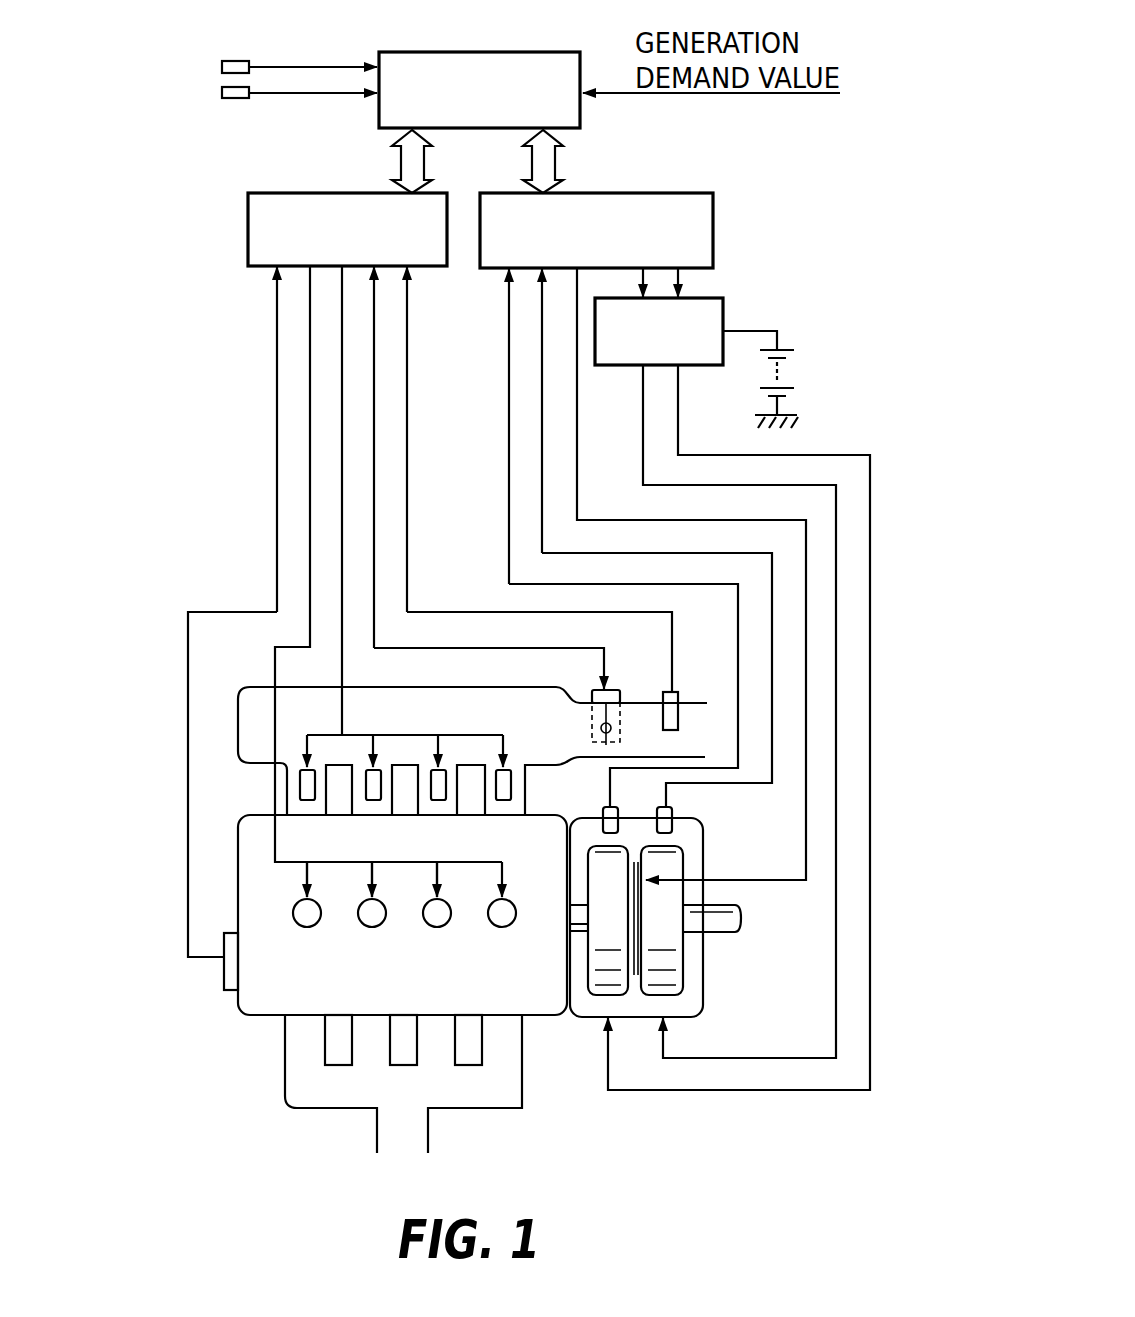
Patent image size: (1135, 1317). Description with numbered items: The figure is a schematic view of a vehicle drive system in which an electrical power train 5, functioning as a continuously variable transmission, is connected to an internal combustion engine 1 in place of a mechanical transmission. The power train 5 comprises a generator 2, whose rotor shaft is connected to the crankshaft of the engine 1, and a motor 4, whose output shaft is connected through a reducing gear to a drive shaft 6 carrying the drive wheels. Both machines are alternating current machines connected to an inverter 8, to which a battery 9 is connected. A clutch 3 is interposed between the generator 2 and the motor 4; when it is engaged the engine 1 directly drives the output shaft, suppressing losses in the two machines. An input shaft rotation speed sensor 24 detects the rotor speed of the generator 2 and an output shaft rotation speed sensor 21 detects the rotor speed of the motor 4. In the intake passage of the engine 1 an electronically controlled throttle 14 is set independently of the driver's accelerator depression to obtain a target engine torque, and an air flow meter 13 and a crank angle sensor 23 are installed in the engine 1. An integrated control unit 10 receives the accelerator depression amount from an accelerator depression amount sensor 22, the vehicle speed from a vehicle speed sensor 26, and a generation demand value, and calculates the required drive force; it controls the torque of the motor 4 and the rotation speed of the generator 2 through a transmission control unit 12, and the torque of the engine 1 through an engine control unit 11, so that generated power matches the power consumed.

The internal combustion engine 1 is at (259, 1016).
The generator 2 is at (602, 975).
The clutch 3 is at (638, 862).
The motor 4 is at (672, 978).
The electrical power train 5 is at (706, 993).
The drive shaft 6 is at (710, 918).
The inverter 8 is at (725, 311).
The battery 9 is at (762, 381).
The integrated control unit 10 is at (568, 53).
The engine control unit 11 is at (248, 248).
The transmission control unit 12 is at (714, 241).
The air flow meter 13 is at (678, 692).
The electronically controlled throttle 14 is at (640, 672).
The output shaft rotation speed sensor 21 is at (673, 810).
The accelerator depression amount sensor 22 is at (232, 99).
The crank angle sensor 23 is at (228, 976).
The input shaft rotation speed sensor 24 is at (603, 810).
The vehicle speed sensor 26 is at (225, 60).